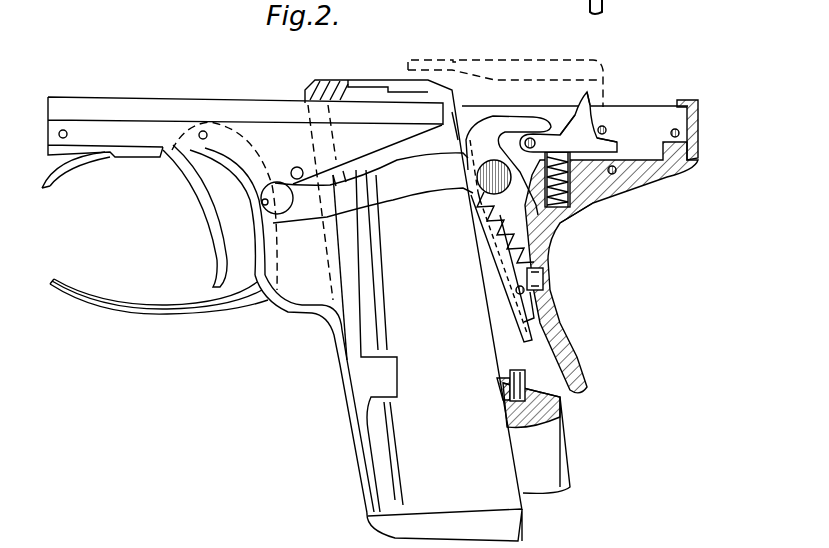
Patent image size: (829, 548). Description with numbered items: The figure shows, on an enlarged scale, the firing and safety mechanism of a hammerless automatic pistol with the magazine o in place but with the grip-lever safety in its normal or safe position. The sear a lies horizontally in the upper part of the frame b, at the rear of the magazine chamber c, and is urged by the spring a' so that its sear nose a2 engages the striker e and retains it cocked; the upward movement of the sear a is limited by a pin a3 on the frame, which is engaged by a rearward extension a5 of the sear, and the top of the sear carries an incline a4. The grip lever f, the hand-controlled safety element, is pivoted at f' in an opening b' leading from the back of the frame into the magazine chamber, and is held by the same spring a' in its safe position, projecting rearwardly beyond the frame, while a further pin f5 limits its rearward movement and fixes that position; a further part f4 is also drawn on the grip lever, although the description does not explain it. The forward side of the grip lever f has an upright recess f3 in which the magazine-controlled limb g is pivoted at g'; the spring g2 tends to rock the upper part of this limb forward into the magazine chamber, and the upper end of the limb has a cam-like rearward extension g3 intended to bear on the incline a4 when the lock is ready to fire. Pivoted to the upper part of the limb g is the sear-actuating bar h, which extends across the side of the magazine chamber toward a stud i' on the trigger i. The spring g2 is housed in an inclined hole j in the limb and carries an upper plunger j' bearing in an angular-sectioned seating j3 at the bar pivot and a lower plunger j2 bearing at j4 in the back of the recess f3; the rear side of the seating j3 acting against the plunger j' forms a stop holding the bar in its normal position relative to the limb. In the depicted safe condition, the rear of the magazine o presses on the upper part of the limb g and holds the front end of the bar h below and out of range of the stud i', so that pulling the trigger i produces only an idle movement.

The sear a is at (568, 122).
The sear nose a2 is at (596, 102).
The pin a3 is at (607, 129).
The incline a4 is at (565, 109).
The rearward extension a5 is at (618, 147).
The spring a' is at (598, 207).
The frame b is at (373, 292).
The opening b' is at (533, 417).
The magazine chamber c is at (346, 364).
The striker e is at (505, 60).
The grip lever f is at (611, 267).
The pivot f' is at (647, 184).
The recess f3 is at (572, 232).
The pin f4 is at (509, 385).
The pin f5 is at (681, 134).
The magazine-controlled limb g is at (489, 268).
The pivot g' is at (483, 301).
The spring g2 is at (483, 236).
The cam-like rearward extension g3 is at (527, 120).
The sear-actuating bar h is at (367, 174).
The trigger i is at (195, 216).
The stud i' is at (224, 211).
The inclined hole j is at (489, 266).
The plunger j' is at (454, 207).
The plunger j2 is at (546, 280).
The seating j3 is at (446, 131).
The bearing j4 is at (545, 298).
The magazine o is at (352, 441).